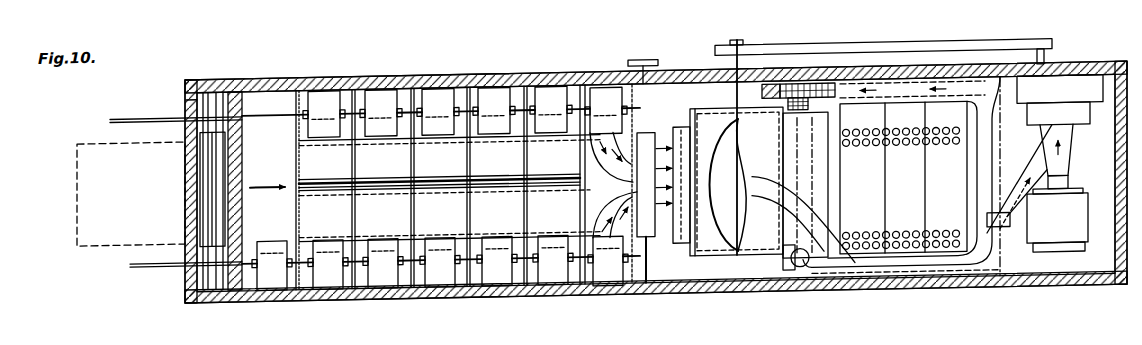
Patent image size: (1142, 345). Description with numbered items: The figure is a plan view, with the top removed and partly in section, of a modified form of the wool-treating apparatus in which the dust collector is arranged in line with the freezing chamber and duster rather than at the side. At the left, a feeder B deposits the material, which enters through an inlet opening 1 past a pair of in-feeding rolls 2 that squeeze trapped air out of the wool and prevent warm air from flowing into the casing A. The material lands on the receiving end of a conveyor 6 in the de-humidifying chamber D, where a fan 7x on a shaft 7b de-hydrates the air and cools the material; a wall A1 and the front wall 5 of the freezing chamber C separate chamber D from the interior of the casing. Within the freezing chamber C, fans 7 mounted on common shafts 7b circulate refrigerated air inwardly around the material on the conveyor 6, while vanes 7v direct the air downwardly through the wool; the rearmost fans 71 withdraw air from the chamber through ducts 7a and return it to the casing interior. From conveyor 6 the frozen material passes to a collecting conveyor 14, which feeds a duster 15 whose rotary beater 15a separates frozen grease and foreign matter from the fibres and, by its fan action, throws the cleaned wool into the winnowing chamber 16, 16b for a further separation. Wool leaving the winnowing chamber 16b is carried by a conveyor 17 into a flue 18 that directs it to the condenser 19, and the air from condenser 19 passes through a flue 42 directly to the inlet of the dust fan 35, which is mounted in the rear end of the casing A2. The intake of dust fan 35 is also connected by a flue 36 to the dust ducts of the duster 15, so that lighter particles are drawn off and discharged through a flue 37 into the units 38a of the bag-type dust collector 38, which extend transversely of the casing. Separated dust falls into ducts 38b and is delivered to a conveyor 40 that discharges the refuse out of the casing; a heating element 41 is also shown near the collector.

The inlet opening 1 is at (186, 102).
The in-feeding rolls 2 is at (222, 190).
The front wall of the freezing chamber 5 is at (296, 223).
The conveyor 6 is at (464, 187).
The fans or blowers 7 is at (327, 102).
The ducts 7a is at (617, 177).
The shafts 7b is at (160, 285).
The vanes 7v is at (449, 182).
The fan 7x is at (283, 290).
The rearmost fans 71 is at (613, 317).
The collecting conveyor 14 is at (660, 250).
The duster 15 is at (700, 125).
The rotary beater 15a is at (738, 165).
The winnowing chamber 16 is at (1018, 255).
The winnowing chamber 16b is at (820, 140).
The conveyor 17 is at (796, 152).
The flue 18 is at (815, 284).
The condenser 19 is at (1057, 220).
The dust fan 35 is at (1058, 128).
The flue 36 is at (766, 190).
The flue 37 is at (893, 100).
The dust collector 38 is at (904, 130).
The dust collector units 38a is at (870, 160).
The ducts 38b is at (860, 213).
The conveyor 40 is at (1010, 100).
The heating element 41 is at (773, 96).
The flue 42 is at (1066, 175).
The casing A is at (744, 300).
The entrance partition A1 is at (196, 175).
The casing A2 is at (1080, 80).
The feeder B is at (112, 245).
The freezing chamber C is at (422, 286).
The de-humidifying chamber D is at (267, 278).